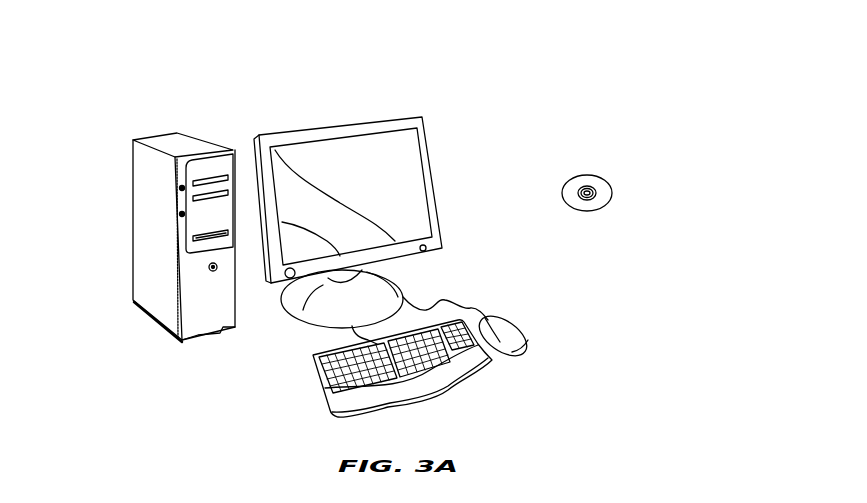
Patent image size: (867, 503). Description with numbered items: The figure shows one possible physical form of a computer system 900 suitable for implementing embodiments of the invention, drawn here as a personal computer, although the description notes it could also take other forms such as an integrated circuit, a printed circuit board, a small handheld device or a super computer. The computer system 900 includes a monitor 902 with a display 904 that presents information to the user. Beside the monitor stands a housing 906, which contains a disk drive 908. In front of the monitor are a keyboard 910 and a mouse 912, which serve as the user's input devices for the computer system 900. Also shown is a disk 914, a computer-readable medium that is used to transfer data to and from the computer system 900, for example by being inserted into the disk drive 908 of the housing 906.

The computer system 900 is at (527, 107).
The monitor 902 is at (437, 198).
The display 904 is at (400, 146).
The housing 906 is at (175, 142).
The disk drive 908 is at (230, 237).
The keyboard 910 is at (322, 389).
The mouse 912 is at (520, 332).
The disk 914 is at (597, 175).